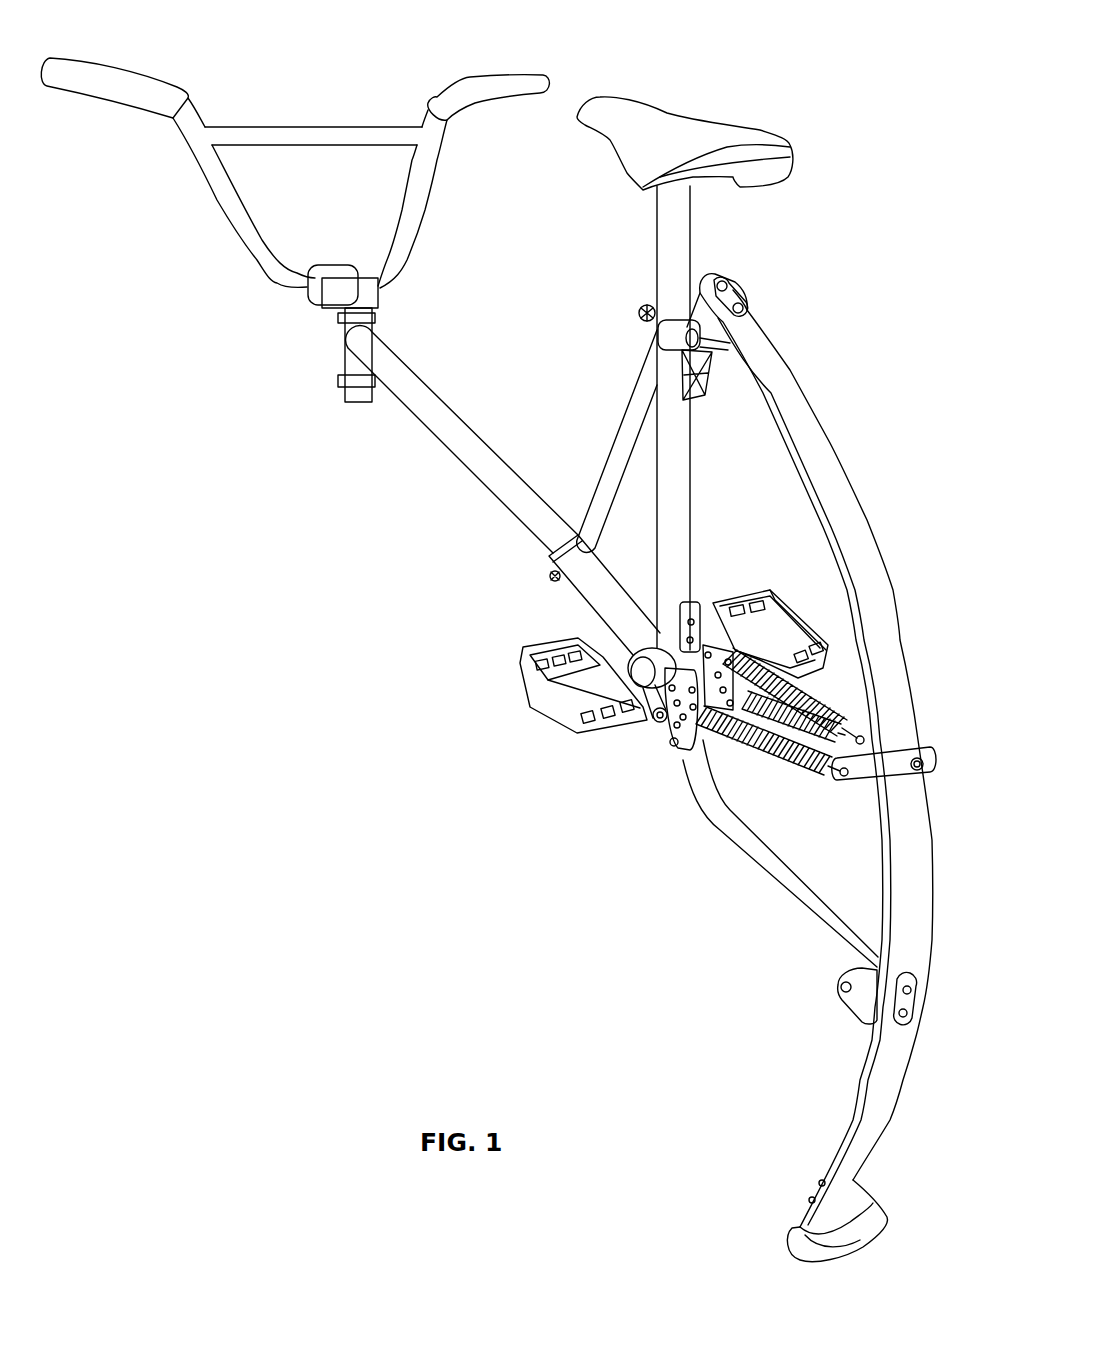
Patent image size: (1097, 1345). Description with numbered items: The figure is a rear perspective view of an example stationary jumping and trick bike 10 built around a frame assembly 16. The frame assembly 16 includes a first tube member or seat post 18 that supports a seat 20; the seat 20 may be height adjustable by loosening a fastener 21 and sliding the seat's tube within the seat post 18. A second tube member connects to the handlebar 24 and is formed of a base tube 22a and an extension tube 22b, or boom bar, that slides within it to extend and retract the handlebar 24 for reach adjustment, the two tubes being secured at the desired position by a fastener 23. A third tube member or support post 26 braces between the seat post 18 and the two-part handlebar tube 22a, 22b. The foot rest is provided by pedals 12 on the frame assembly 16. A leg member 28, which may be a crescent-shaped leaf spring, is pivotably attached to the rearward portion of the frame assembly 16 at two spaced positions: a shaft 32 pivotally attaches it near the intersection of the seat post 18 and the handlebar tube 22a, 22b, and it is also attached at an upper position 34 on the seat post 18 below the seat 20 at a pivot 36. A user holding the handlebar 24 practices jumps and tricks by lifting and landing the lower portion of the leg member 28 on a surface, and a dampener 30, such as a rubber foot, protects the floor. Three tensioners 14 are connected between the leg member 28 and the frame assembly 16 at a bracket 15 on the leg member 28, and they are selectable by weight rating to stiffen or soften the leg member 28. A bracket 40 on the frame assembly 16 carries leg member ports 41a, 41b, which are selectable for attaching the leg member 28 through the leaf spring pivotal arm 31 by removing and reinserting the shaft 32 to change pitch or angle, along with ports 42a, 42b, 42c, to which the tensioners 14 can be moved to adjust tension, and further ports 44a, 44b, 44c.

The stationary jumping and trick bike 10 is at (808, 90).
The pedals 12 is at (543, 714).
The tensioners 14 is at (770, 762).
The bracket 15 is at (937, 745).
The frame assembly 16 is at (528, 545).
The seat post 18 is at (692, 238).
The seat 20 is at (667, 110).
The fastener 21 is at (644, 310).
The base tube 22a is at (590, 607).
The extension tube 22b is at (450, 410).
The fastener 23 is at (547, 580).
The handlebar 24 is at (292, 127).
The support post 26 is at (602, 467).
The leg member 28 is at (912, 658).
The dampener 30 is at (887, 1217).
The leaf spring pivotal arm 31 is at (783, 900).
The shaft 32 is at (652, 733).
The upper position 34 is at (658, 332).
The pivot 36 is at (718, 348).
The bracket 40 is at (655, 728).
The leg member port 41a is at (660, 740).
The leg member port 41b is at (672, 745).
The port 42a is at (700, 618).
The port 42b is at (715, 650).
The port 42c is at (722, 660).
The port 44a is at (735, 650).
The port 44b is at (760, 648).
The port 44c is at (790, 637).